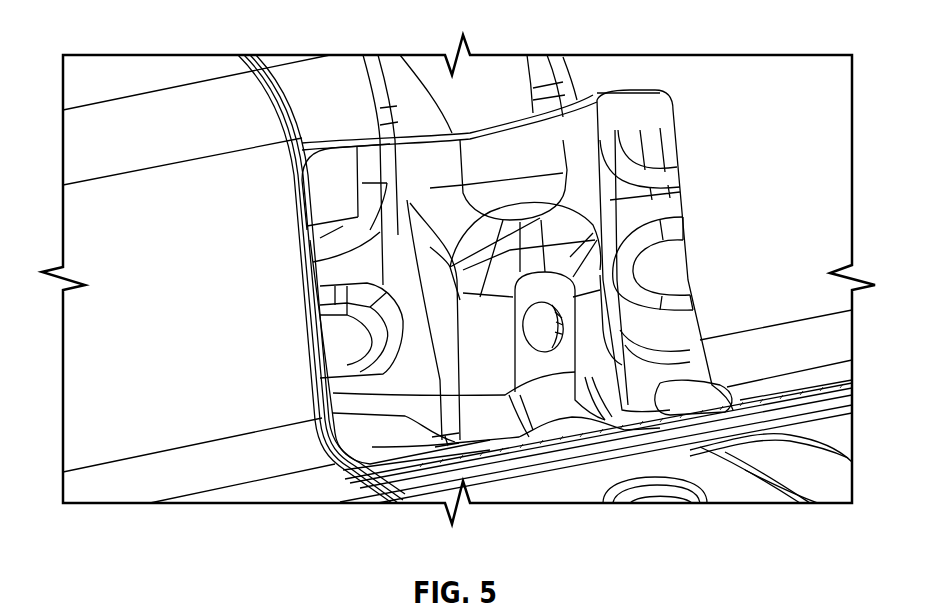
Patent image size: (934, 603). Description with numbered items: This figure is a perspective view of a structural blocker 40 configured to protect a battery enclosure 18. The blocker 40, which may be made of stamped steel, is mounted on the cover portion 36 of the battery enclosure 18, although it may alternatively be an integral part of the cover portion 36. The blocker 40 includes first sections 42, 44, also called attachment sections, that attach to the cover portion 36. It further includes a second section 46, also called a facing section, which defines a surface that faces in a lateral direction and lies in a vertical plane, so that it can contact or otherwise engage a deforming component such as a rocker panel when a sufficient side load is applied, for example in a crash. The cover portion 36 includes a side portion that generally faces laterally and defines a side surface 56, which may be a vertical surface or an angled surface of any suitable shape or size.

The battery enclosure 18 is at (88, 368).
The cover portion 36 is at (157, 105).
The blocker 40 is at (700, 180).
The first section 42 is at (687, 224).
The first section 44 is at (315, 303).
The second section 46 is at (590, 317).
The side surface 56 is at (835, 190).